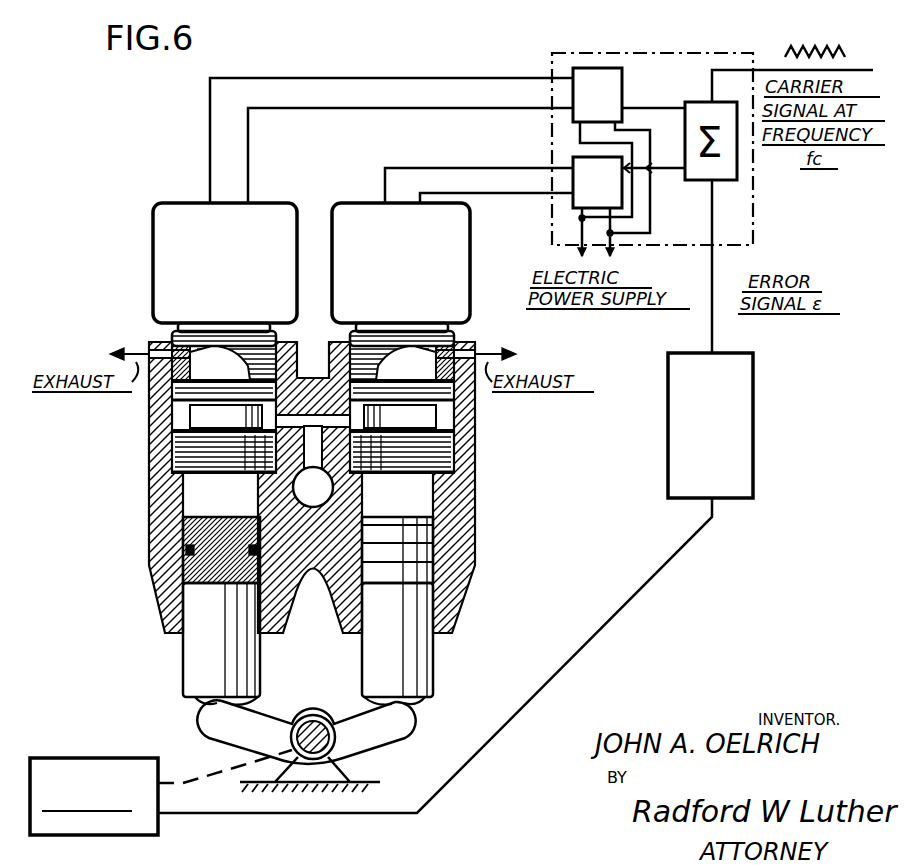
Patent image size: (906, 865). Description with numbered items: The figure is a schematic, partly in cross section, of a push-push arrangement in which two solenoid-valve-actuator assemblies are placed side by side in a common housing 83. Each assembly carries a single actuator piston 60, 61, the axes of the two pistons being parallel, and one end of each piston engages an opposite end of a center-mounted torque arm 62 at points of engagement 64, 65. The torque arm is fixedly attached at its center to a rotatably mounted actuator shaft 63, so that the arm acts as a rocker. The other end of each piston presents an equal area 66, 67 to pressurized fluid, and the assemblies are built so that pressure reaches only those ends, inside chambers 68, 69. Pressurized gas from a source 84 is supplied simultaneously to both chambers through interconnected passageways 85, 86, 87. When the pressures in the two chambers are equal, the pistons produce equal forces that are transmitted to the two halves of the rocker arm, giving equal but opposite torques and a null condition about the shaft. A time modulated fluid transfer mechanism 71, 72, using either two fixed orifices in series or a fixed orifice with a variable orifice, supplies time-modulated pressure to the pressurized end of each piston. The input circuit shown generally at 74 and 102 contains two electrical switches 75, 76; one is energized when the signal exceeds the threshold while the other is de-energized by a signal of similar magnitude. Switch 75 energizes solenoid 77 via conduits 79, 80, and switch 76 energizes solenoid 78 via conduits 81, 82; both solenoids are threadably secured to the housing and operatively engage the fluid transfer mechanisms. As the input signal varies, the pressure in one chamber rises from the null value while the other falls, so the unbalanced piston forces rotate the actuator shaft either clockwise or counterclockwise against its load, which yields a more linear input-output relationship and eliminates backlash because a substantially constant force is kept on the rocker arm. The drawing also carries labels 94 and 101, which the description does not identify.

The actuator piston 60 is at (415, 661).
The actuator piston 61 is at (185, 652).
The torque arm 62 is at (355, 770).
The actuator shaft 63 is at (370, 745).
The point of engagement 64 is at (400, 702).
The point of engagement 65 is at (185, 704).
The pressurized end area 66 is at (435, 535).
The pressurized end area 67 is at (195, 540).
The chamber 68 is at (435, 490).
The chamber 69 is at (190, 495).
The time modulated fluid transfer mechanism 71 is at (440, 418).
The time modulated fluid transfer mechanism 72 is at (182, 418).
The input circuit 74 is at (692, 53).
The electrical switch 75 is at (590, 68).
The electrical switch 76 is at (590, 200).
The solenoid 77 is at (236, 278).
The solenoid 78 is at (412, 278).
The conduit 79 is at (380, 78).
The conduit 80 is at (410, 108).
The conduit 81 is at (522, 168).
The conduit 82 is at (526, 194).
The housing 83 is at (182, 440).
The source of pressurized gas 84 is at (313, 461).
The passageway 85 is at (315, 372).
The passageway 86 is at (262, 331).
The passageway 87 is at (410, 331).
The linkage 94 is at (177, 783).
The error signal line 101 is at (716, 335).
The input circuit 102 is at (756, 400).